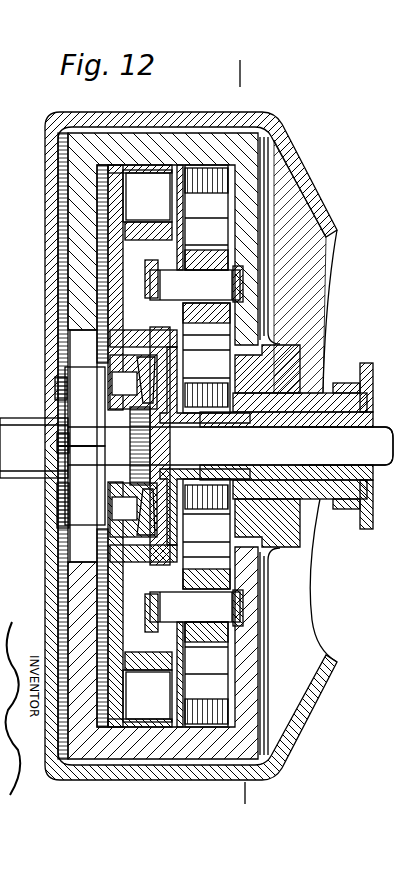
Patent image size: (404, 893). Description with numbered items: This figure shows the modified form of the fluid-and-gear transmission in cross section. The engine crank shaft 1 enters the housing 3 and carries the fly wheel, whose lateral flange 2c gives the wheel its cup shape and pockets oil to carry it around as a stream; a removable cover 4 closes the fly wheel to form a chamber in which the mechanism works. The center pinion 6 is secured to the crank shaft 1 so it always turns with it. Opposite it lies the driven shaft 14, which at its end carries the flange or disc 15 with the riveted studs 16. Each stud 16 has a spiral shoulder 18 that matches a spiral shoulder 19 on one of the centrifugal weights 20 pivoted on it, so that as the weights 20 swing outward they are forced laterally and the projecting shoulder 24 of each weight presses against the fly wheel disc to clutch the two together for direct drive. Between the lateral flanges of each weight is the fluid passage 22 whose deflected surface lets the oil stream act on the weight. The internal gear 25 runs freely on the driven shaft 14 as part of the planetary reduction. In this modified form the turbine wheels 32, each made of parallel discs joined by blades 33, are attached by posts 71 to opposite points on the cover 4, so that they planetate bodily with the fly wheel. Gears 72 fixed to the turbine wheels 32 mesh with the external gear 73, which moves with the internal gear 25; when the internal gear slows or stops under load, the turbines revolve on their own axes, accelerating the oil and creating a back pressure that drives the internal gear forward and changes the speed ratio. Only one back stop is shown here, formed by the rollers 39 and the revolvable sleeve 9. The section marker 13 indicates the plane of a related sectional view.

The crank shaft 1 is at (34, 448).
The lateral flange 2c is at (38, 340).
The housing 3 is at (271, 113).
The cover 4 is at (245, 181).
The center pinion 6 is at (127, 433).
The revolvable sleeve 9 is at (376, 483).
The section line 13 is at (248, 73).
The driven shaft 14 is at (346, 446).
The flange or disc 15 is at (230, 446).
The studs 16 is at (118, 509).
The spiral shoulders 18 is at (206, 446).
The spiral shoulders 19 is at (140, 368).
The weights 20 is at (114, 257).
The fluid passage 22 is at (147, 696).
The projecting shoulder 24 is at (106, 364).
The internal gear 25 is at (403, 193).
The turbine wheels 32 is at (240, 230).
The blades 33 is at (206, 446).
The rollers 39 is at (278, 512).
The posts 71 is at (250, 292).
The gears 72 is at (168, 250).
The external gear 73 is at (176, 308).